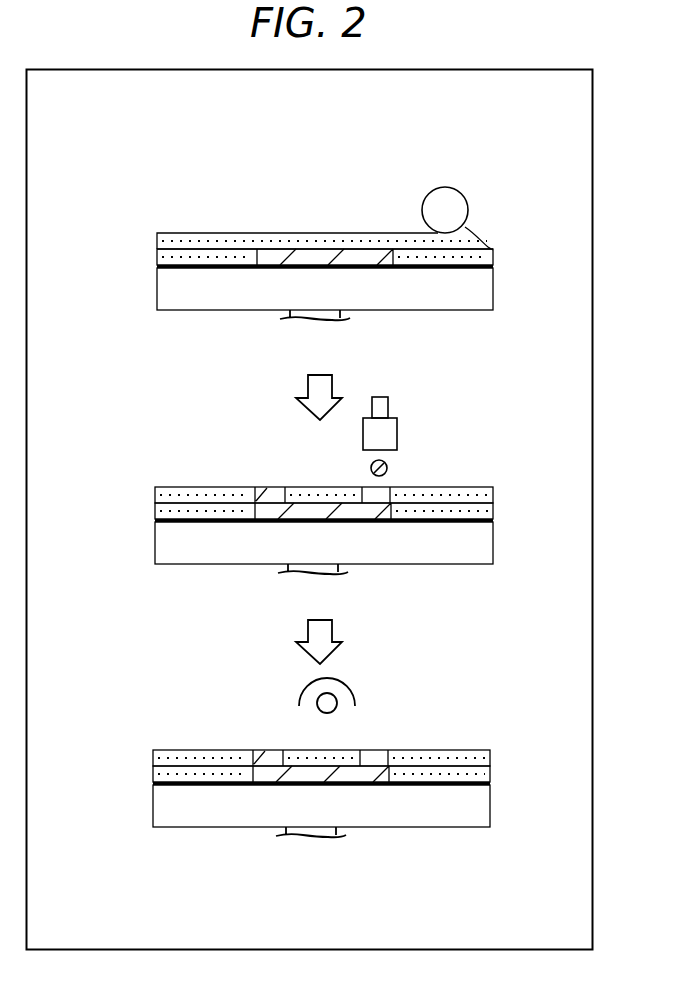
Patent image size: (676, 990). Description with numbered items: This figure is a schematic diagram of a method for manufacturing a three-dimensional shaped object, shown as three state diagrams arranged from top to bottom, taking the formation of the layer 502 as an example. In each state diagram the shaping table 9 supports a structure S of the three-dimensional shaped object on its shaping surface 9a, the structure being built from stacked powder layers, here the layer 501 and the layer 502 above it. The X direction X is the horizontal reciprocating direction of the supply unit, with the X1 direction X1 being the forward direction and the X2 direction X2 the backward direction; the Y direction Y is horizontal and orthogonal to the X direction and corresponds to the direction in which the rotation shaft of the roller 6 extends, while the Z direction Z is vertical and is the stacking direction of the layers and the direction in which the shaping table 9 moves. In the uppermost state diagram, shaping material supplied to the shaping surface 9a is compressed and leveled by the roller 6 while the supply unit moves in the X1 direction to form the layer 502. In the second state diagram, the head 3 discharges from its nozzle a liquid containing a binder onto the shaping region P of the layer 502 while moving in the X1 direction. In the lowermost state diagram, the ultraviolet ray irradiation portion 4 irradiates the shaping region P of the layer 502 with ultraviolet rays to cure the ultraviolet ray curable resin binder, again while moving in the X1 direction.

The layer 502 is at (157, 240).
The layer 501 is at (157, 261).
The shaping surface 9a is at (157, 268).
The shaping table 9 is at (190, 298).
The structure S is at (253, 259).
The roller 6 is at (445, 187).
The head 3 is at (380, 397).
The ultraviolet ray irradiation portion 4 is at (350, 681).
The shaping region P is at (263, 476).
The Z direction Z is at (132, 135).
The Y direction Y is at (531, 160).
The X direction X is at (323, 939).
The X1 direction X1 is at (432, 939).
The X2 direction X2 is at (160, 939).